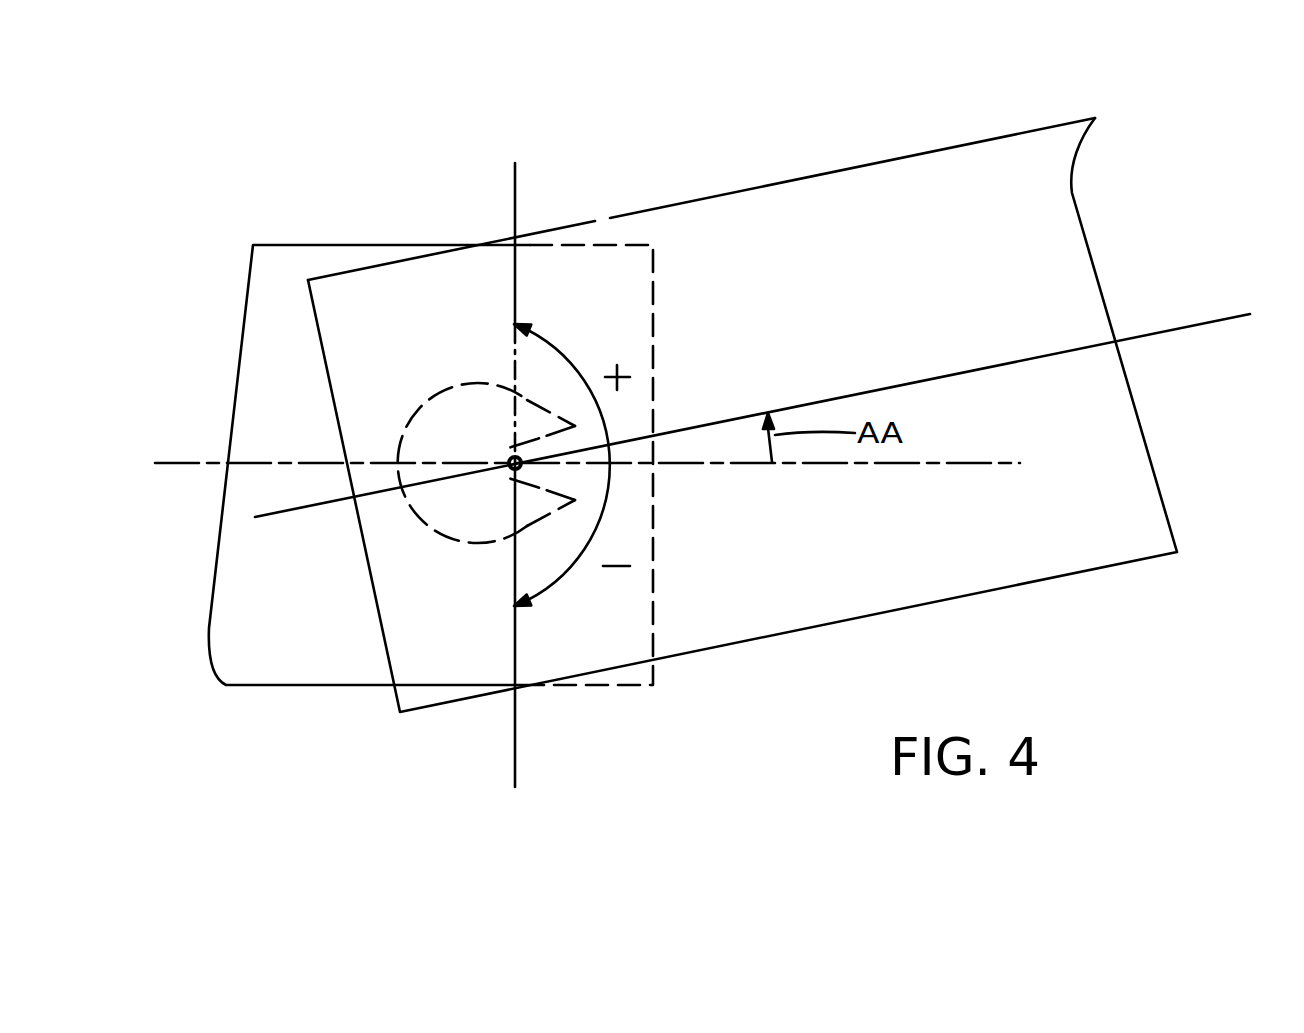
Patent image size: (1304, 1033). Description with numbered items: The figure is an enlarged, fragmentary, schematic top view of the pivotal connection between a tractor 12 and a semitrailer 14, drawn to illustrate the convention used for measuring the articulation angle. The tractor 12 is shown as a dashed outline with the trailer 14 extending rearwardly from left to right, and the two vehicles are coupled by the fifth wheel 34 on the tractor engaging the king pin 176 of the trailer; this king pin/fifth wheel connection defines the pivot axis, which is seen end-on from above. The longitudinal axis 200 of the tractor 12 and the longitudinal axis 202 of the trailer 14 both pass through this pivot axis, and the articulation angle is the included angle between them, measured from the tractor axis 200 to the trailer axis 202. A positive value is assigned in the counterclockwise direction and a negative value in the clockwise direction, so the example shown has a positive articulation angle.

The tractor 12 is at (268, 298).
The trailer 14 is at (933, 173).
The fifth wheel 34 is at (463, 385).
The king pin 176 is at (512, 468).
The longitudinal axis of the tractor 200 is at (958, 466).
The longitudinal axis of the trailer 202 is at (1003, 368).